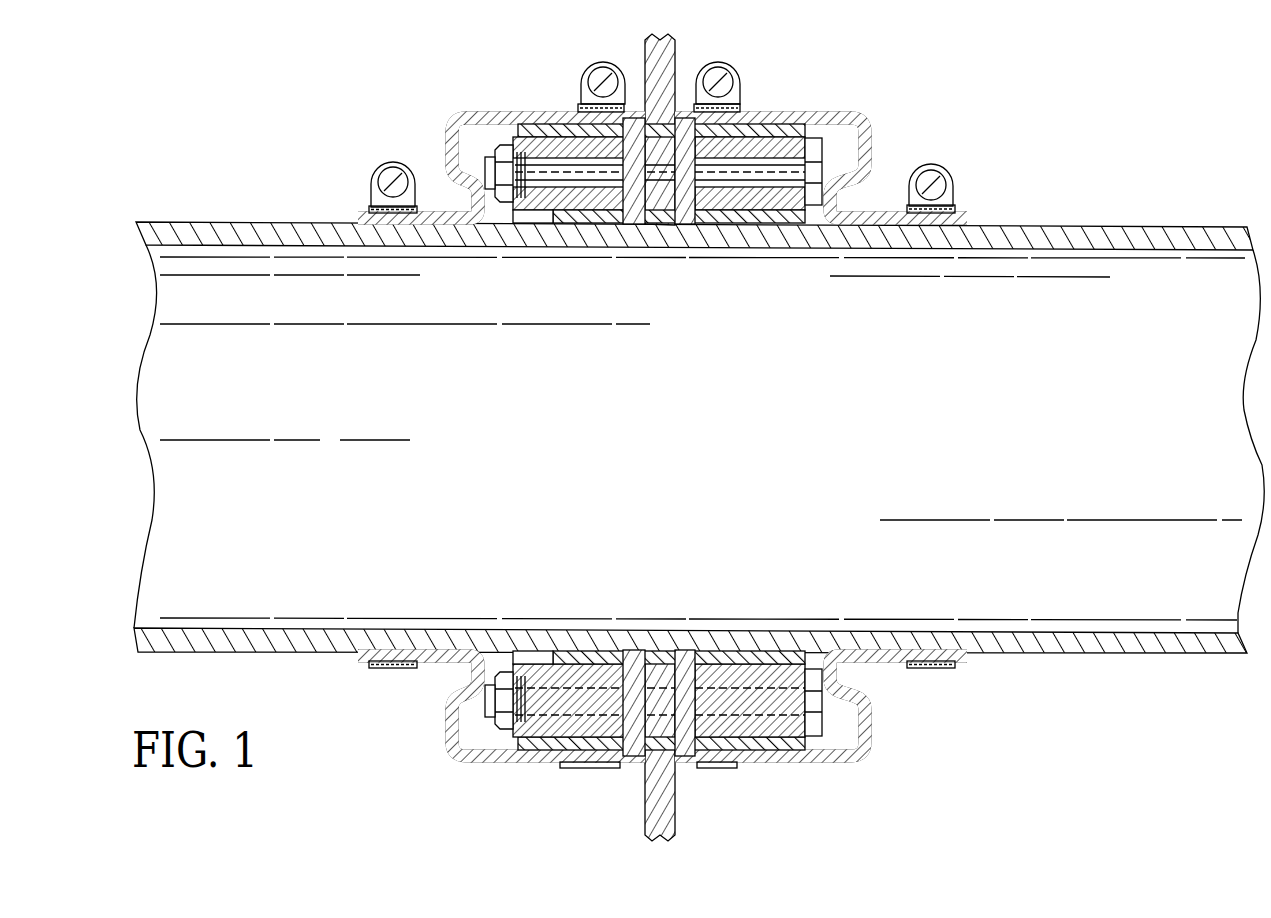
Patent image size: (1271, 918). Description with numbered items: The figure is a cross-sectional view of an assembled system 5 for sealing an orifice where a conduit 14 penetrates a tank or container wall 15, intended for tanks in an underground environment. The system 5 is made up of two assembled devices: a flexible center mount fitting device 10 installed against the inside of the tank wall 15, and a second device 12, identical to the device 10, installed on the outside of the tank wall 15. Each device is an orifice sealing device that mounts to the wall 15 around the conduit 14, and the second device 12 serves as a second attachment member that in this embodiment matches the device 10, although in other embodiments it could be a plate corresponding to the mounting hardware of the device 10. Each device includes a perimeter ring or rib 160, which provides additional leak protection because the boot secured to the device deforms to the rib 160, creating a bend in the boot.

The system 5 is at (757, 441).
The flexible center mount fitting device 10 is at (533, 112).
The second device 12 is at (800, 113).
The conduit 14 is at (1160, 653).
The tank wall 15 is at (678, 64).
The perimeter ring or rib 160 is at (553, 768).